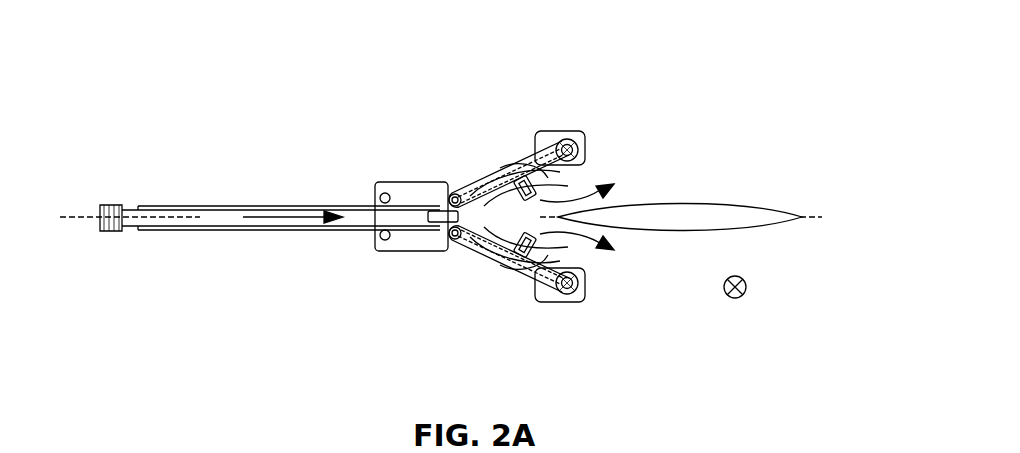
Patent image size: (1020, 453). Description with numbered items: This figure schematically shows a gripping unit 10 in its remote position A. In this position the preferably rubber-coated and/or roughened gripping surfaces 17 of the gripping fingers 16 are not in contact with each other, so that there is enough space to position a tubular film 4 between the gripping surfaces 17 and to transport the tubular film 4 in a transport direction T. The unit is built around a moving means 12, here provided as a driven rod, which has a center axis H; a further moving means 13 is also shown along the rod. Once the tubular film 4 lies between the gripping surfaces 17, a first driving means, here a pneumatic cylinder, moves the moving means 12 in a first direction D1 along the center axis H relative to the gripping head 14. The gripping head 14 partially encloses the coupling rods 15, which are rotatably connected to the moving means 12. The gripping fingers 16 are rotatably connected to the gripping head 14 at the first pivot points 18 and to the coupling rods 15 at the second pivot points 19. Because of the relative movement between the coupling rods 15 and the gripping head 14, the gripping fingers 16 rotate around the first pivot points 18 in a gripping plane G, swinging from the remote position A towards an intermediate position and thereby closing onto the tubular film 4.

The gripping unit 10 is at (596, 72).
The tubular film 4 is at (758, 210).
The moving means 12 is at (213, 230).
The further moving means 13 is at (212, 206).
The gripping head 14 is at (425, 182).
The coupling rod 15 is at (490, 165).
The gripping finger 16 is at (515, 170).
The gripping surface 17 is at (518, 185).
The first pivot point 18 is at (590, 160).
The second pivot point 19 is at (560, 182).
The remote position A is at (266, 123).
The first direction D1 is at (266, 229).
The center axis H is at (70, 222).
The gripping plane G is at (666, 322).
The transport direction T is at (748, 287).